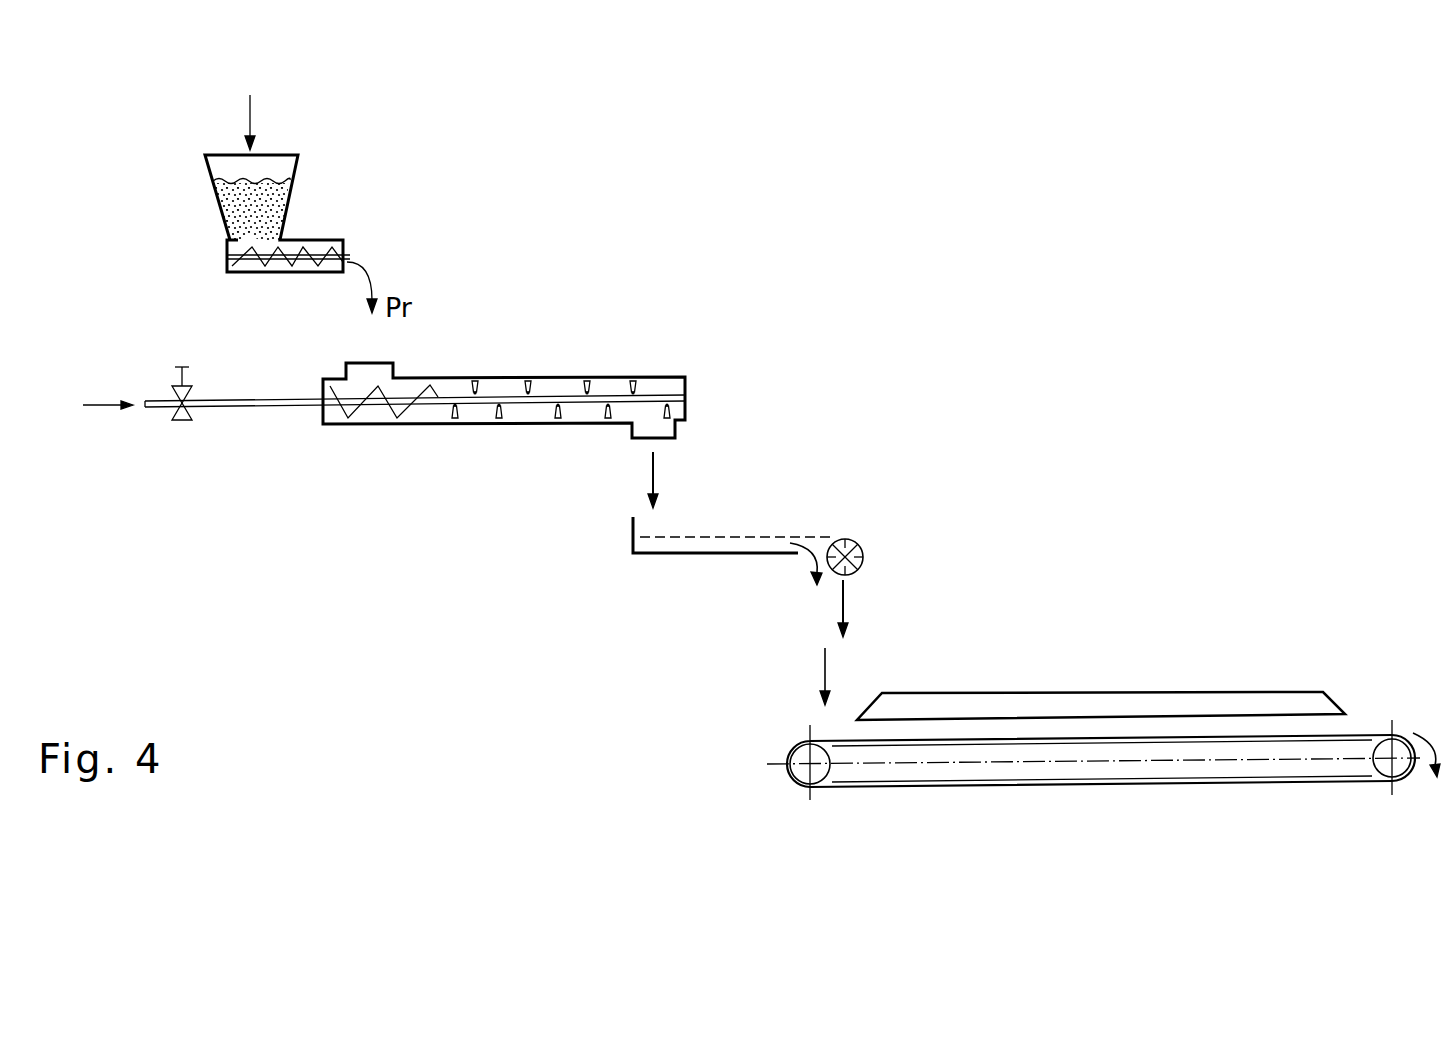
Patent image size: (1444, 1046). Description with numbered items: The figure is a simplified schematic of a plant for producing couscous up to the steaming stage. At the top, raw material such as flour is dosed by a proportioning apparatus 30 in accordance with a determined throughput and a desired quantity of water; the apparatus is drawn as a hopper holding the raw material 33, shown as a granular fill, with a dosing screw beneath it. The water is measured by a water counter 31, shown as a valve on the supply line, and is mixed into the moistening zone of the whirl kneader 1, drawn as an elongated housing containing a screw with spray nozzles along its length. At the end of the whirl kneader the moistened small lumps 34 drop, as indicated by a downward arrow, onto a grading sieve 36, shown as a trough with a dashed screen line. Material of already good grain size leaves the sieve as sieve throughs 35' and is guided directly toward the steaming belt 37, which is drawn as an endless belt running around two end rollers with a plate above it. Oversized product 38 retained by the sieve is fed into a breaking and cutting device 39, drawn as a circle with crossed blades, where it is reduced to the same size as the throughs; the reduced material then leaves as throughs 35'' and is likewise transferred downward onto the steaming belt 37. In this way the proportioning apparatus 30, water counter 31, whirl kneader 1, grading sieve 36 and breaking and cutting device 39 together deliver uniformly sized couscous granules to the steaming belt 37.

The whirl kneader 1 is at (545, 377).
The proportioning apparatus 30 is at (297, 167).
The water counter 31 is at (182, 420).
The granular material in hopper 33 is at (265, 190).
The small lumps 34 is at (655, 473).
The sieve throughs 35' is at (784, 597).
The sieve throughs 35'' is at (882, 608).
The grading sieve 36 is at (688, 557).
The steaming belt 37 is at (1110, 783).
The oversized product 38 is at (845, 539).
The breaking and cutting device 39 is at (863, 557).